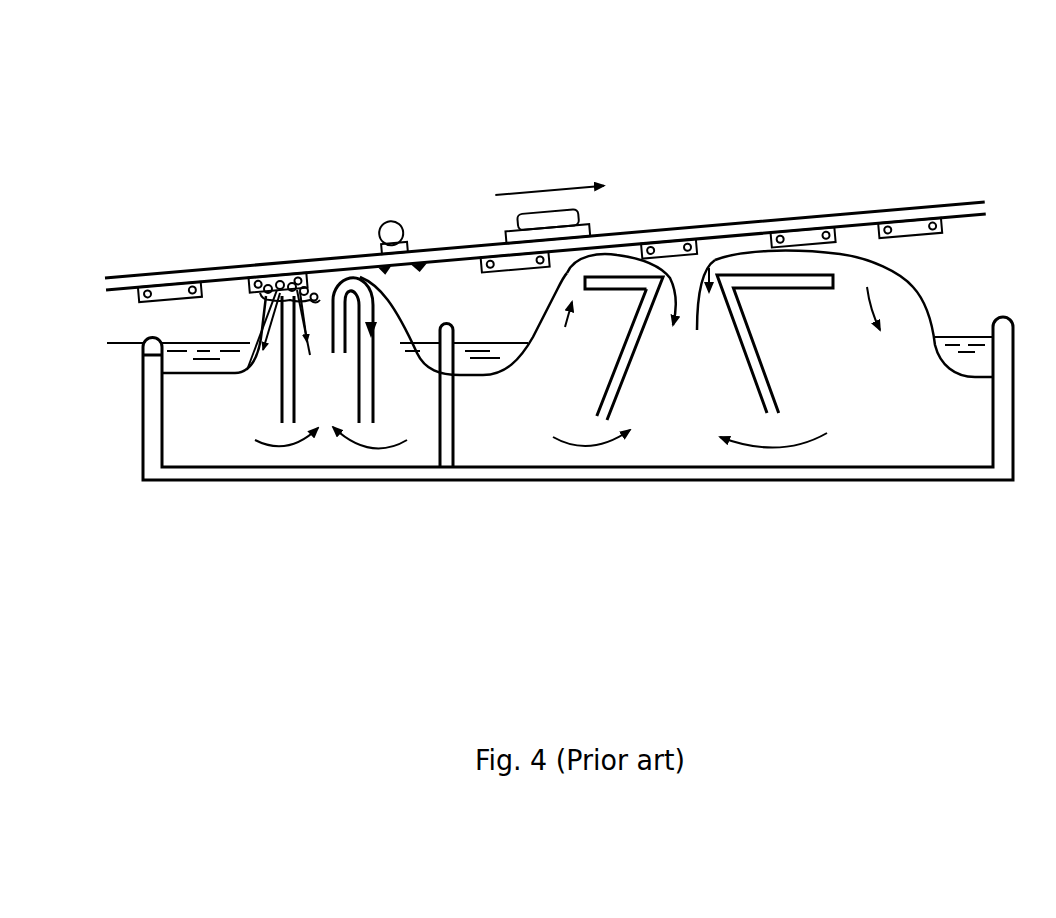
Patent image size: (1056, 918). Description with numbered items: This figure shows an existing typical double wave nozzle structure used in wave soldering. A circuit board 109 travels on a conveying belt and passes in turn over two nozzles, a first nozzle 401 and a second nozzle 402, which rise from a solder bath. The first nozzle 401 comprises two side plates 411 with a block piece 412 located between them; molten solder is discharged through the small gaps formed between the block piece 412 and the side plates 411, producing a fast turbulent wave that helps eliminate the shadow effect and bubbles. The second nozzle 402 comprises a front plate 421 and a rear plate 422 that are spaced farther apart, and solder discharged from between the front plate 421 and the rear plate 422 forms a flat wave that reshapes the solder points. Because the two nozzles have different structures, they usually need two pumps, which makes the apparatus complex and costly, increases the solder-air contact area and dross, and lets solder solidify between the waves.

The circuit board 109 is at (207, 270).
The first nozzle 401 is at (328, 258).
The second nozzle 402 is at (687, 272).
The side plates 411 is at (353, 253).
The block piece 412 is at (313, 293).
The front plate 421 is at (636, 275).
The rear plate 422 is at (765, 280).